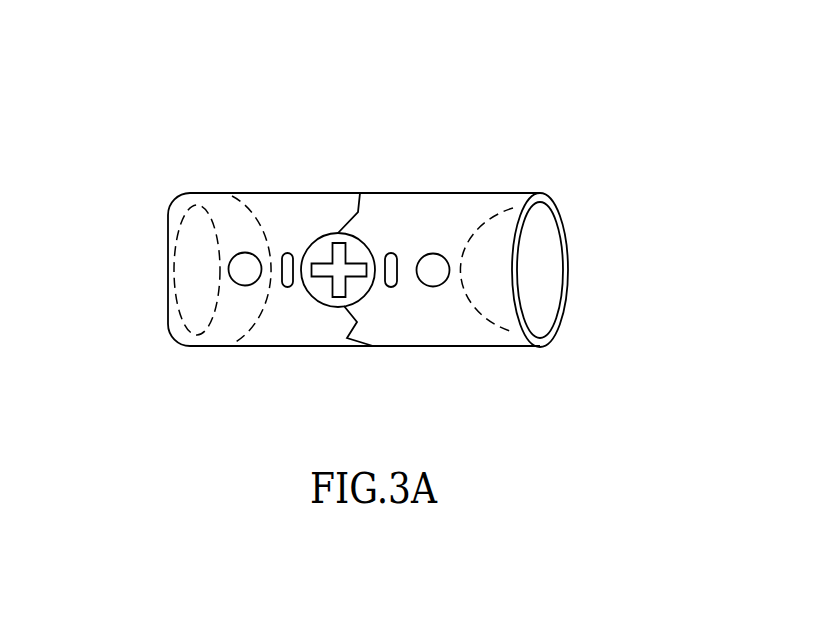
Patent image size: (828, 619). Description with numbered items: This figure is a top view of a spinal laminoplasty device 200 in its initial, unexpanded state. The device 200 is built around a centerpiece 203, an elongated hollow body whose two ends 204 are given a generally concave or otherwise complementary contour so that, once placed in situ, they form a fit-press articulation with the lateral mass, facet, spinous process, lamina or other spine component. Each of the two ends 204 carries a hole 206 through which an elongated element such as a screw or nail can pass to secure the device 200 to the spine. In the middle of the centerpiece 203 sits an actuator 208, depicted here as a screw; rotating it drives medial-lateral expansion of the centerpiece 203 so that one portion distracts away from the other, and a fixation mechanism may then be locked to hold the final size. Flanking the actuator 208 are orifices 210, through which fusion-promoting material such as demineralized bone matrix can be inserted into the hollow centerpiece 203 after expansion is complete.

The device 200 is at (390, 115).
The centerpiece 203 is at (440, 332).
The ends 204 is at (167, 260).
The hole 206 is at (247, 268).
The actuator 208 is at (322, 287).
The orifices 210 is at (287, 257).